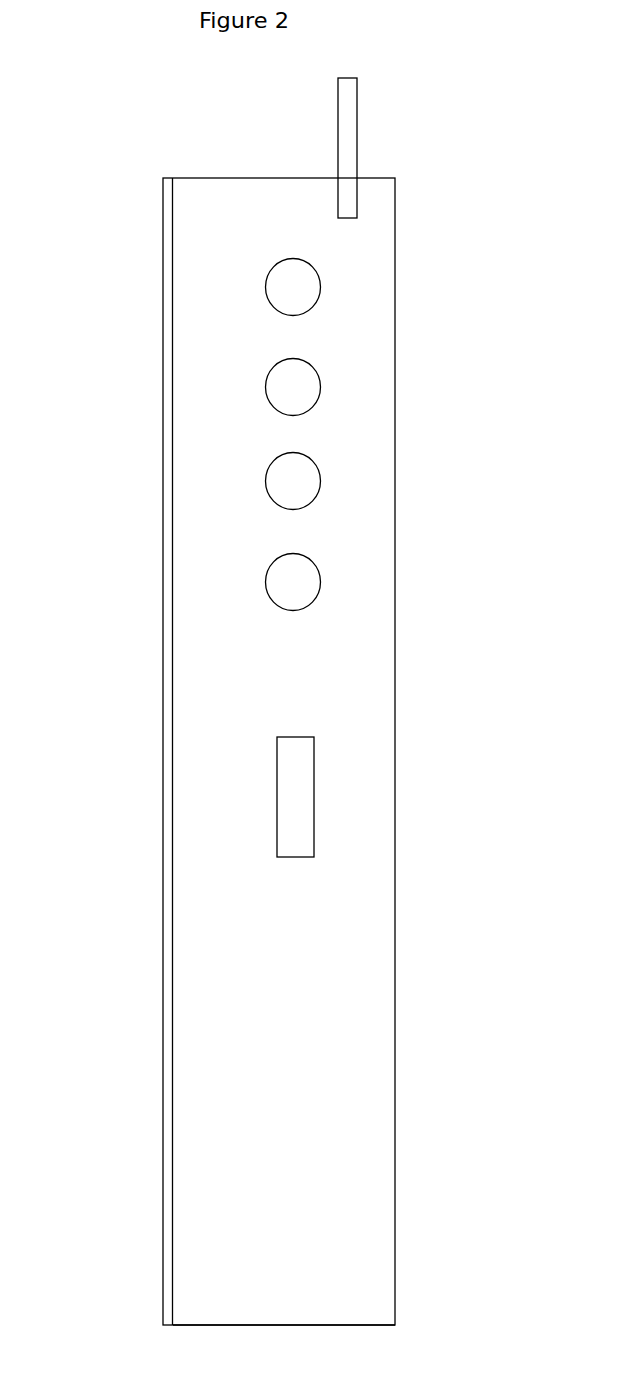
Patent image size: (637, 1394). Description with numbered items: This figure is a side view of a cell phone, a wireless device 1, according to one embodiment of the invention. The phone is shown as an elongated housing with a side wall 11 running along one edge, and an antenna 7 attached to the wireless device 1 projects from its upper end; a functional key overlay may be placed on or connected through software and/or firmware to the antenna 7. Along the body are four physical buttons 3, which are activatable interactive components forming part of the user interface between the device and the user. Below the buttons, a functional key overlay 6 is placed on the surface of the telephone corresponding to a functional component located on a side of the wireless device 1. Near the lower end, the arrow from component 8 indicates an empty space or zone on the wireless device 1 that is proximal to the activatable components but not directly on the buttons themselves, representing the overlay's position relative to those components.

The wireless device 1 is at (188, 154).
The blade edge / side wall 11 is at (162, 302).
The antenna 7 is at (351, 132).
The physical buttons 3 is at (258, 311).
The functional key overlay 6 is at (302, 871).
The component 8 is at (215, 1234).